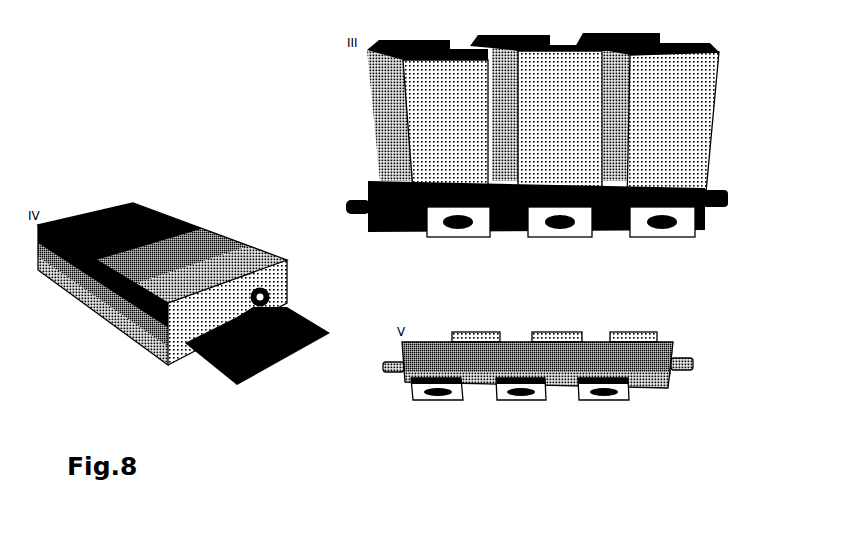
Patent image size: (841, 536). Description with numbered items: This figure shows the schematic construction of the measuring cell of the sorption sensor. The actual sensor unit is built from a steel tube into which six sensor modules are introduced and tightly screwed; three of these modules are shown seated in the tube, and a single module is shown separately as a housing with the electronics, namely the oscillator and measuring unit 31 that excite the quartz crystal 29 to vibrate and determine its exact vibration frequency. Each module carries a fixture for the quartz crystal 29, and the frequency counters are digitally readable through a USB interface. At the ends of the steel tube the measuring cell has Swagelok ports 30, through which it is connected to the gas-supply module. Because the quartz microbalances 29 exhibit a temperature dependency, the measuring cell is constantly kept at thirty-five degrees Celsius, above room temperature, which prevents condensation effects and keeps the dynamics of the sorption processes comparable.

The quartz crystal 29 is at (270, 297).
The Swagelok ports 30 is at (348, 207).
The oscillator 31 is at (163, 222).